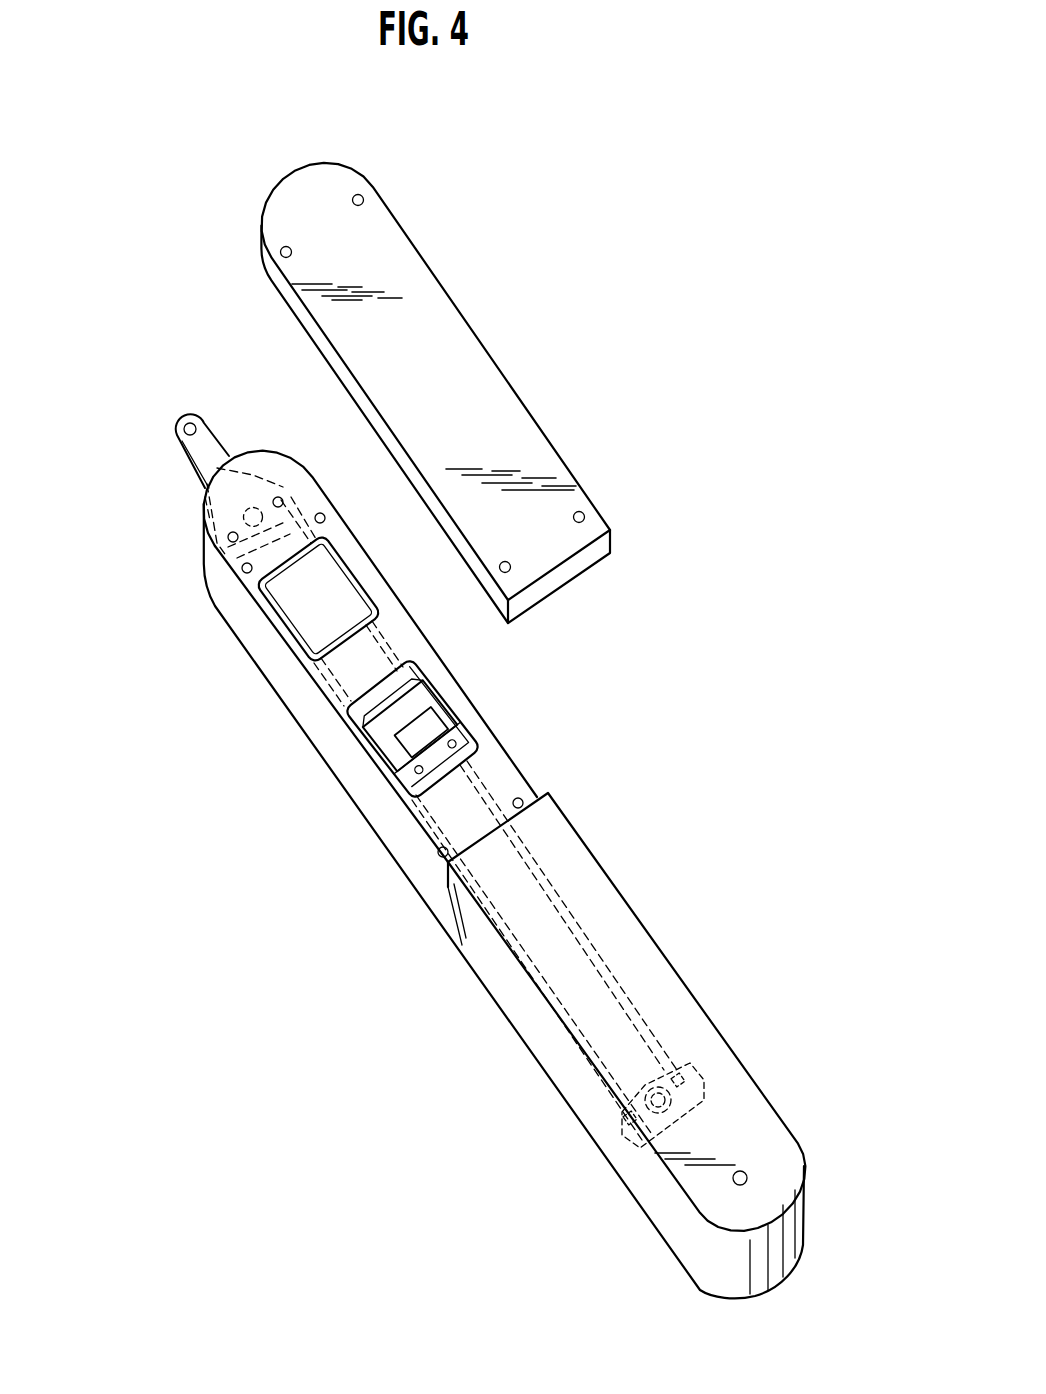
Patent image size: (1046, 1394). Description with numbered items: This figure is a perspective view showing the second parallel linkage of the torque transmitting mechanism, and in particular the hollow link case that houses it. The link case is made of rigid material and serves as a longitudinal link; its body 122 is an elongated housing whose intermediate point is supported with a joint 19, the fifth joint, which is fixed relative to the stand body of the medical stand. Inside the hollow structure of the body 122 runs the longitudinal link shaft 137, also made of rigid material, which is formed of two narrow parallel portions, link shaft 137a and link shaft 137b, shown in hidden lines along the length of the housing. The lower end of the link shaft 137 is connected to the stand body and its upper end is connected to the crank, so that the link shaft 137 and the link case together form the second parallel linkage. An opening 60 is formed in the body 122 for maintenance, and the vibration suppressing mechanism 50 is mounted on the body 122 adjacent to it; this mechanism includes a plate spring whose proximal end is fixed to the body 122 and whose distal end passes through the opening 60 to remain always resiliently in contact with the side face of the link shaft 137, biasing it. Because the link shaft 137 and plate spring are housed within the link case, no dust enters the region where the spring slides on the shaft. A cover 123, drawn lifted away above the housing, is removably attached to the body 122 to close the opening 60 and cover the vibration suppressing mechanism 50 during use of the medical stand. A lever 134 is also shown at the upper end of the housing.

The cover 123 is at (532, 440).
The body 122 is at (722, 1047).
The lever 134 is at (148, 409).
The opening 60 is at (340, 683).
The vibration suppressing mechanism 50 is at (453, 718).
The longitudinal link shaft 137 is at (550, 818).
The link shaft 137a is at (540, 973).
The link shaft 137b is at (617, 978).
The joint 19 is at (643, 1150).